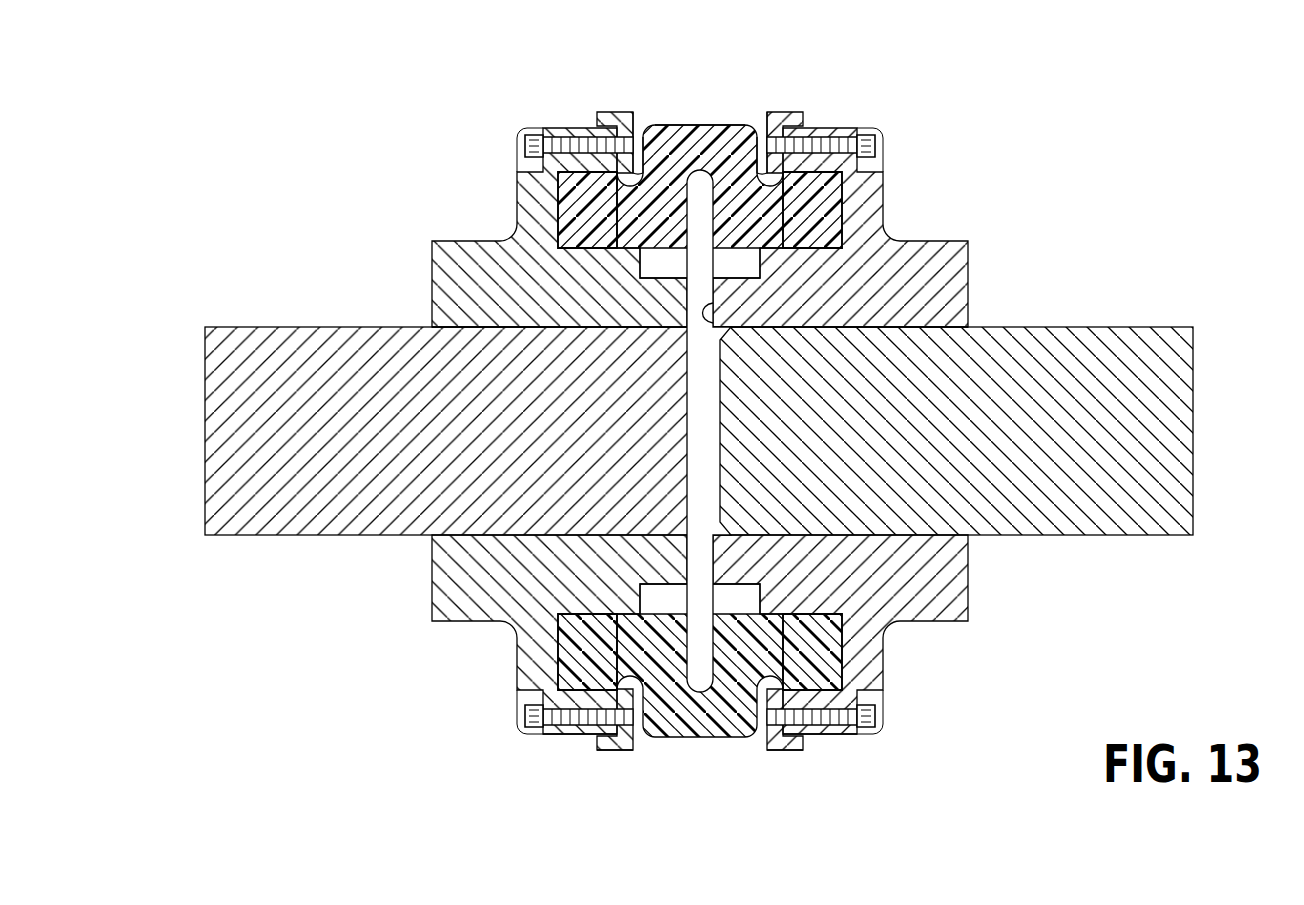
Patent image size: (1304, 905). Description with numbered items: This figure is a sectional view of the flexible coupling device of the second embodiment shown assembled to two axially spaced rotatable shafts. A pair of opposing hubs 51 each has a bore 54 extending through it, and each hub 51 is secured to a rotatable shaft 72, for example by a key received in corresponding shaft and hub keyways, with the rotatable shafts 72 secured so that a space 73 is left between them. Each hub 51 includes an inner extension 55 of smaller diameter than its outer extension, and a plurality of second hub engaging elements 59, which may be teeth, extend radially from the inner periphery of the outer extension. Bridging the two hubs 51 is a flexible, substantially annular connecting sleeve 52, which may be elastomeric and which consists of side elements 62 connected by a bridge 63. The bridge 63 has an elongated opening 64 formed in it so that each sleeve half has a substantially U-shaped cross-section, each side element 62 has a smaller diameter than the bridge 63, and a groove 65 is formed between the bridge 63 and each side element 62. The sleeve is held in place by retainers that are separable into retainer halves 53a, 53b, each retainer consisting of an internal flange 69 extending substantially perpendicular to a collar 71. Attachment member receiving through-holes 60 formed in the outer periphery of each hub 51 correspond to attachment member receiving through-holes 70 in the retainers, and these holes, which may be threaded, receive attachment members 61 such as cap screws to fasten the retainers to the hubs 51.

The hub 51 is at (487, 248).
The connecting sleeve 52 is at (718, 136).
The retainer half 53a is at (637, 740).
The retainer half 53b is at (765, 742).
The bore 54 is at (470, 312).
The inner extension 55 is at (560, 628).
The second hub engaging elements 59 is at (540, 740).
The attachment member receiving through-holes 60 is at (575, 128).
The attachment member 61 is at (523, 140).
The side elements 62 is at (560, 200).
The bridge 63 is at (681, 125).
The elongated opening 64 is at (700, 180).
The groove 65 is at (636, 182).
The internal flange 69 is at (762, 744).
The attachment member receiving through-holes 70 is at (617, 112).
The collar 71 is at (605, 750).
The rotatable shaft 72 is at (283, 500).
The space 73 is at (690, 505).